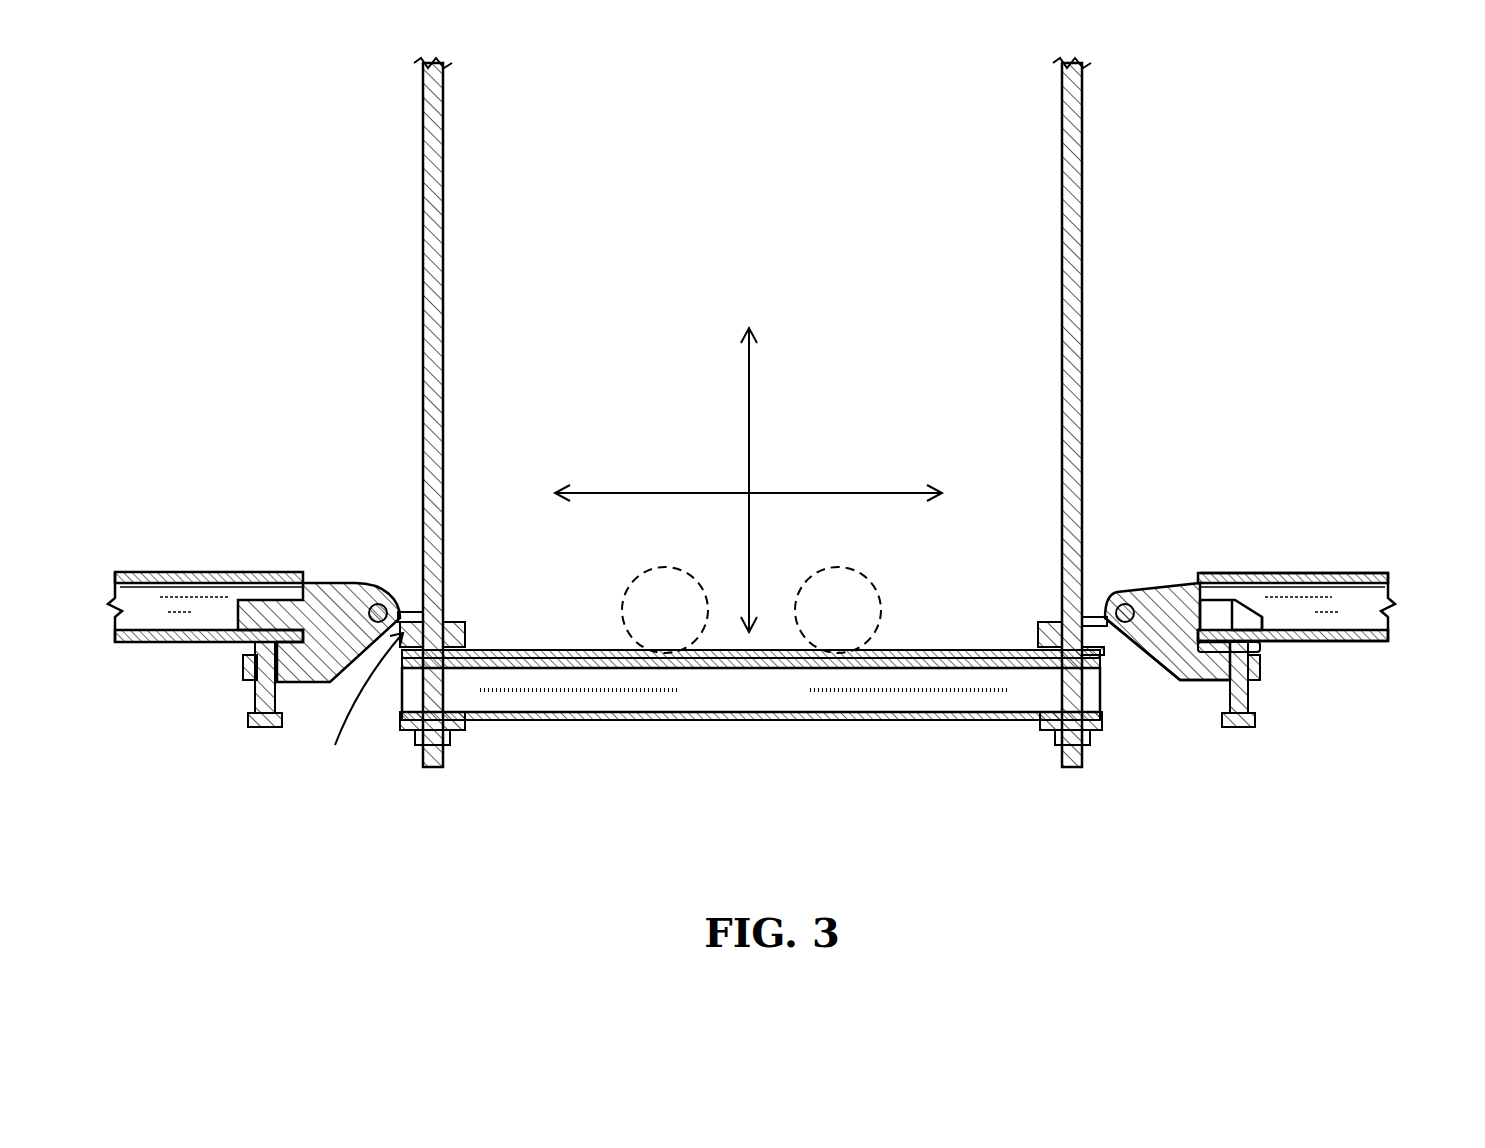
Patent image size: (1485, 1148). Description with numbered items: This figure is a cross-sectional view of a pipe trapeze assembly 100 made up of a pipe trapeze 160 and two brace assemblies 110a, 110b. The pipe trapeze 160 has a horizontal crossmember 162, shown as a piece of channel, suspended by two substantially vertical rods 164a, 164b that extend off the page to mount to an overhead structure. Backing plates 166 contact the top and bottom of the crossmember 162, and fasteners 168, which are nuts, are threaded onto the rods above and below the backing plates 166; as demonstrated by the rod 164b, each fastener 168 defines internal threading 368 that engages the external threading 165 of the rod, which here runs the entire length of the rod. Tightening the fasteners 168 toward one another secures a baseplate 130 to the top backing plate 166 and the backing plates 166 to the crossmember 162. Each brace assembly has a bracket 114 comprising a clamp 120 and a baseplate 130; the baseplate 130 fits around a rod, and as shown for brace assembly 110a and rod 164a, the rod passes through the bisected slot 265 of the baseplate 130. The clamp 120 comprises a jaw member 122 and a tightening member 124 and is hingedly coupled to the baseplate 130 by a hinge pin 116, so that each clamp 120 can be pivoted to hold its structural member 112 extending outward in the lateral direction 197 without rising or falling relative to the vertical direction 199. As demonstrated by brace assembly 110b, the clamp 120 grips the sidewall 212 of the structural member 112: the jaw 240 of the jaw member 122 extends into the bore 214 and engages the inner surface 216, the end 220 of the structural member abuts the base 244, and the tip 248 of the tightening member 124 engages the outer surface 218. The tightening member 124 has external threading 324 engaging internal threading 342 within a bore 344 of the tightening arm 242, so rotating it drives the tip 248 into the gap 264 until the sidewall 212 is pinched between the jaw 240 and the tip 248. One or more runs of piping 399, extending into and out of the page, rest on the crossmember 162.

The pipe trapeze assembly 100 is at (210, 162).
The brace assembly 110a is at (285, 578).
The brace assembly 110b is at (1375, 575).
The structural member 112 is at (782, 564).
The bracket 114 is at (1167, 563).
The hinge pin 116 is at (378, 604).
The clamp 120 is at (778, 592).
The jaw member 122 is at (1211, 585).
The tightening member 124 is at (1225, 520).
The baseplate 130 is at (463, 628).
The pipe trapeze 160 is at (451, 412).
The crossmember 162 is at (731, 710).
The rod 164a is at (423, 470).
The rod 164b is at (1013, 412).
The external threading 165 is at (1062, 366).
The backing plate 166 is at (465, 652).
The fastener 168 is at (455, 622).
The lateral direction 197 is at (672, 495).
The vertical direction 199 is at (750, 428).
The sidewall 212 is at (1380, 645).
The bore 214 is at (1357, 613).
The inner surface 216 is at (1353, 600).
The outer surface 218 is at (1370, 575).
The end 220 is at (1205, 600).
The jaw 240 is at (1264, 618).
The tightening arm 242 is at (1260, 672).
The base 244 is at (1167, 563).
The tip 248 is at (1230, 630).
The gap 264 is at (1250, 643).
The slot 265 is at (356, 704).
The external threading 324 is at (1230, 737).
The internal threading 342 is at (1199, 737).
The bore 344 is at (1232, 690).
The internal threading 368 is at (1060, 620).
The piping 399 is at (703, 628).